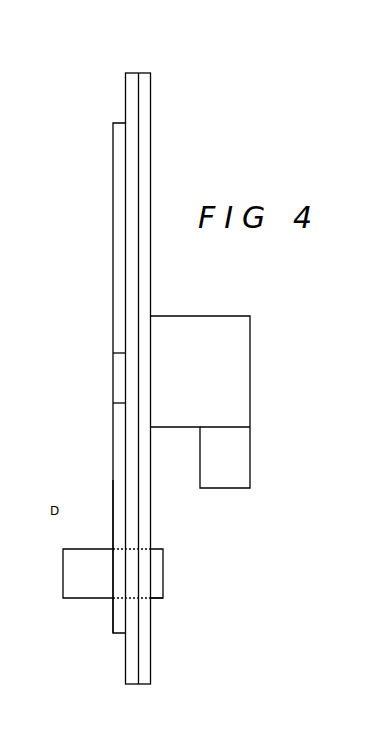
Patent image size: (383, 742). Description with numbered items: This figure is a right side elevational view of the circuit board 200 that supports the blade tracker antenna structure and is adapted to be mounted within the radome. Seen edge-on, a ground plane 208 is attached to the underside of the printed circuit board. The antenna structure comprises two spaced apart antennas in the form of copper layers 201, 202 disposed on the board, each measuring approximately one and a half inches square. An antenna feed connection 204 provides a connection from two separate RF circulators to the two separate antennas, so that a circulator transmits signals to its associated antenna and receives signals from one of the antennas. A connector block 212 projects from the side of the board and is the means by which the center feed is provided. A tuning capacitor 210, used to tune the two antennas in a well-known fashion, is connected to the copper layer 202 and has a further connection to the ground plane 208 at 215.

The circuit board 200 is at (130, 72).
The ground plane 208 is at (143, 72).
The copper layer 201 is at (119, 149).
The copper layer 202 is at (113, 470).
The antenna feed connection 204 is at (119, 378).
The connector block 212 is at (247, 367).
The tuning capacitor 210 is at (66, 549).
The connection to ground plane 215 is at (160, 600).